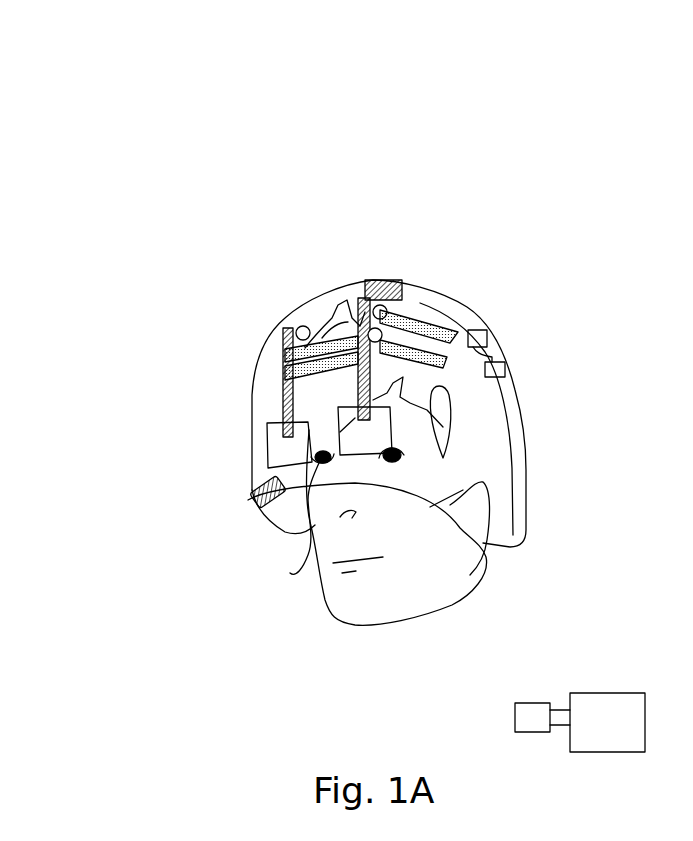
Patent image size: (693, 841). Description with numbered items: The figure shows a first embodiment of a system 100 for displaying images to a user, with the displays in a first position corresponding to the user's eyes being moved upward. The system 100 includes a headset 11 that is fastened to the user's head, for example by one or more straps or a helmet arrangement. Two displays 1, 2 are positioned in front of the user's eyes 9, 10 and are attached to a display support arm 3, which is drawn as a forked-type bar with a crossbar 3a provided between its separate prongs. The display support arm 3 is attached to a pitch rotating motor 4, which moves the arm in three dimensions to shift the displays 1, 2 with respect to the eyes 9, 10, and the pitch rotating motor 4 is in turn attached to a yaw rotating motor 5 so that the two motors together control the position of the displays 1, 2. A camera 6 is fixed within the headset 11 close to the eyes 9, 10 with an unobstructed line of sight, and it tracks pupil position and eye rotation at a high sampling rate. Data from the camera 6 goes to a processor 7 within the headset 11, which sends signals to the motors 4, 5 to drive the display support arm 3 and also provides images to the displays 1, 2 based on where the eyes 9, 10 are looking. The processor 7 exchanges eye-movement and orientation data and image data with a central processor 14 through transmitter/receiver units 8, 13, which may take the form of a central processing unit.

The system 100 is at (420, 253).
The display 1 is at (280, 445).
The display 2 is at (350, 412).
The display support arm 3 is at (340, 328).
The crossbar 3a is at (290, 348).
The pitch rotating motor 4 is at (334, 312).
The yaw rotating motor 5 is at (378, 278).
The camera 6 is at (252, 500).
The processor 7 is at (488, 337).
The transmitter/receiver unit 8 is at (506, 370).
The user's eye 9 is at (290, 573).
The user's eye 10 is at (404, 456).
The headset 11 is at (465, 328).
The transmitter/receiver unit 13 is at (520, 703).
The central processor 14 is at (598, 693).